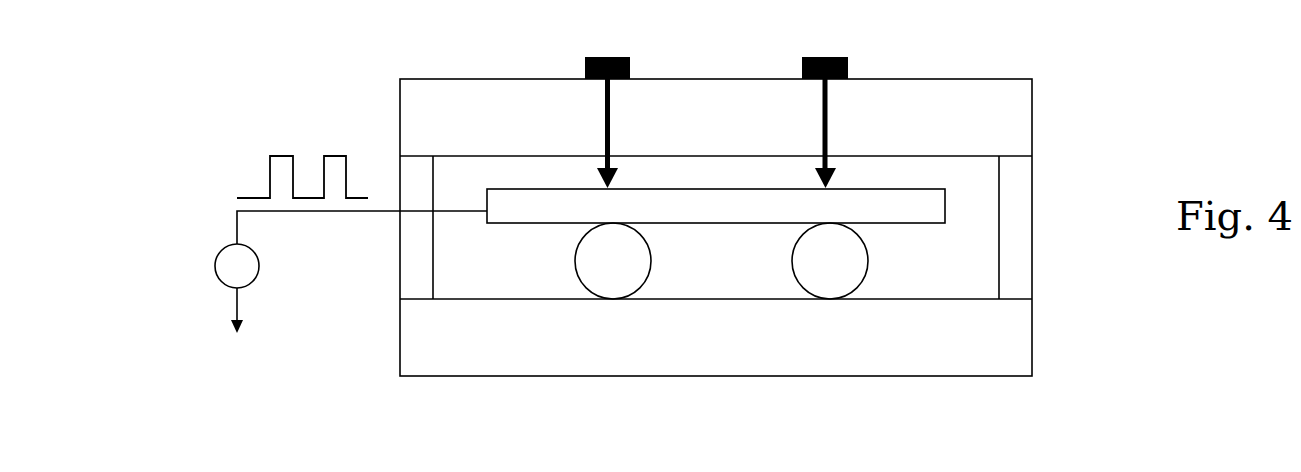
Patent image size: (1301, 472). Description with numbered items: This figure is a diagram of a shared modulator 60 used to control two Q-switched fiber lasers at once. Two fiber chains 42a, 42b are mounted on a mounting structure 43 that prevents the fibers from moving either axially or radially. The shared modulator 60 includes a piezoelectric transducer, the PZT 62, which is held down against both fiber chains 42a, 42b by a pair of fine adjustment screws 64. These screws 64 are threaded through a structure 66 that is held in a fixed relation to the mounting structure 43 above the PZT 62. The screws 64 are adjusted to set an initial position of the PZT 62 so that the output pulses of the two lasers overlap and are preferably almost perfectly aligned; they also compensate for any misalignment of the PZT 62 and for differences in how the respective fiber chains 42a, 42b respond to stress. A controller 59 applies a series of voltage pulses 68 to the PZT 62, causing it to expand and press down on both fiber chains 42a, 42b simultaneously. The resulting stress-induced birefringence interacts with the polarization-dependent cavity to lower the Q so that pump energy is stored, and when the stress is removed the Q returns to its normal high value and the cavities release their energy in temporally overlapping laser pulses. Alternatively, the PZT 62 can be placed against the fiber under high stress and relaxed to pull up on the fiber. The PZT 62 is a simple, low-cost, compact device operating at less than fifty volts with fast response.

The shared modulator 60 is at (348, 119).
The structure 66 is at (465, 90).
The mounting structure 43 is at (1032, 333).
The PZT 62 is at (880, 202).
The fiber chain 42a is at (585, 257).
The fiber chain 42b is at (869, 258).
The fine adjustment screws 64 is at (847, 64).
The voltage pulses 68 is at (268, 167).
The controller 59 is at (218, 253).